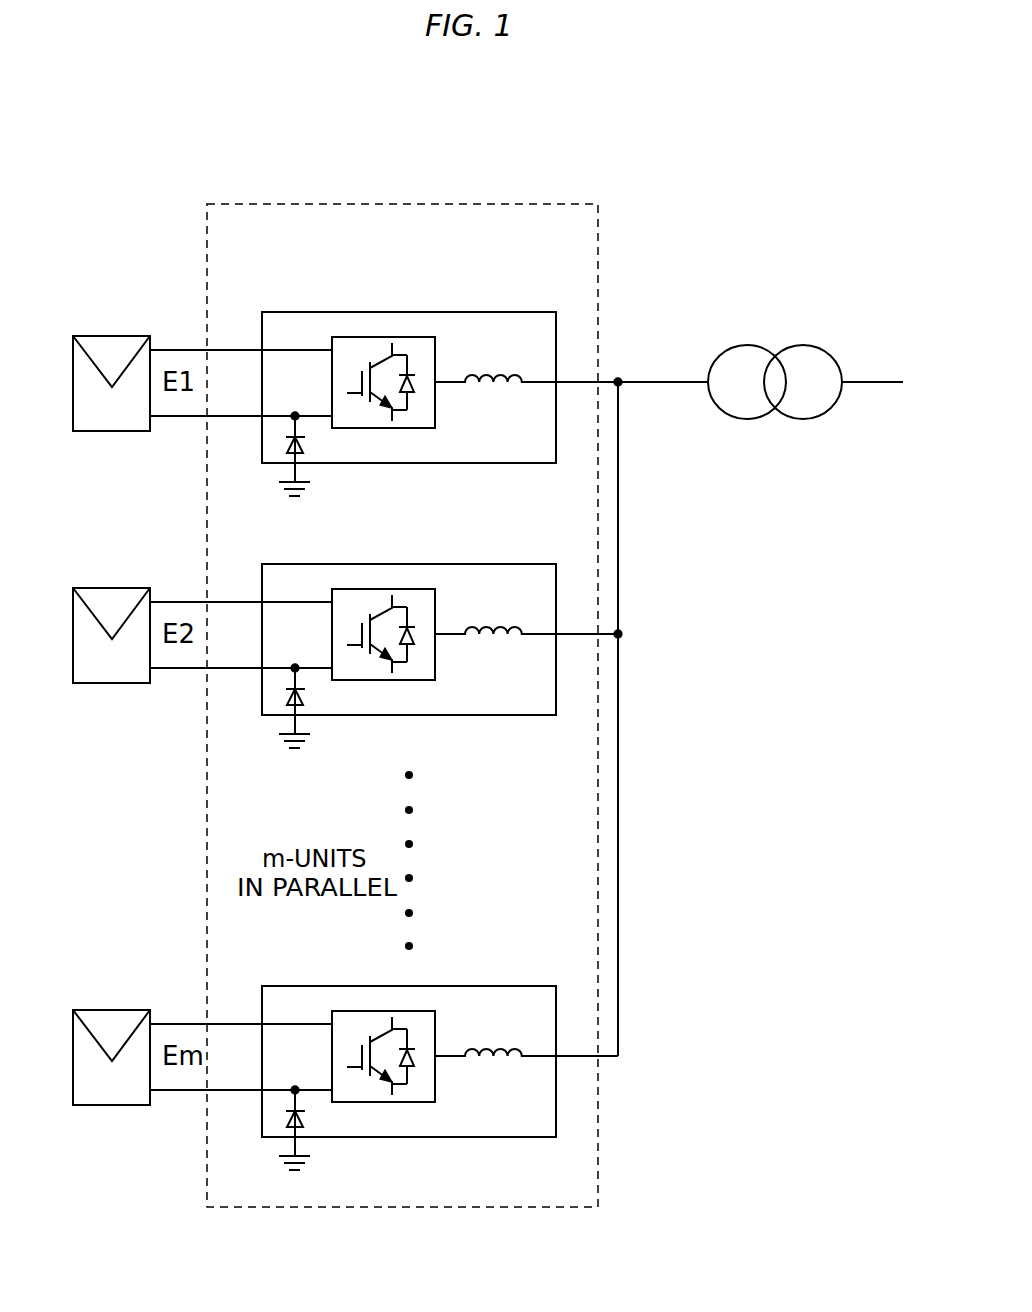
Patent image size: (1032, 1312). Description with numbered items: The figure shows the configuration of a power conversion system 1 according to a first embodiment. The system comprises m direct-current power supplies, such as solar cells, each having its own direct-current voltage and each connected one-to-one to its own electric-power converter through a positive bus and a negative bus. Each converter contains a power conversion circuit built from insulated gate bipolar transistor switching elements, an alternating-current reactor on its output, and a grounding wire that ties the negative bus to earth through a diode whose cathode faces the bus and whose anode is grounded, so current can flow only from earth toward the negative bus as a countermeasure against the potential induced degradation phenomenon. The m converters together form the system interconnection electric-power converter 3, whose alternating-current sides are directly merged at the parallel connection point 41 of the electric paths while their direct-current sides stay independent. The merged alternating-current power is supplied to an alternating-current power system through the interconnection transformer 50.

The power conversion system 1 is at (822, 212).
The system interconnection electric-power converter 3 is at (552, 204).
The parallel connection point 41 is at (622, 378).
The interconnection transformer 50 is at (800, 347).